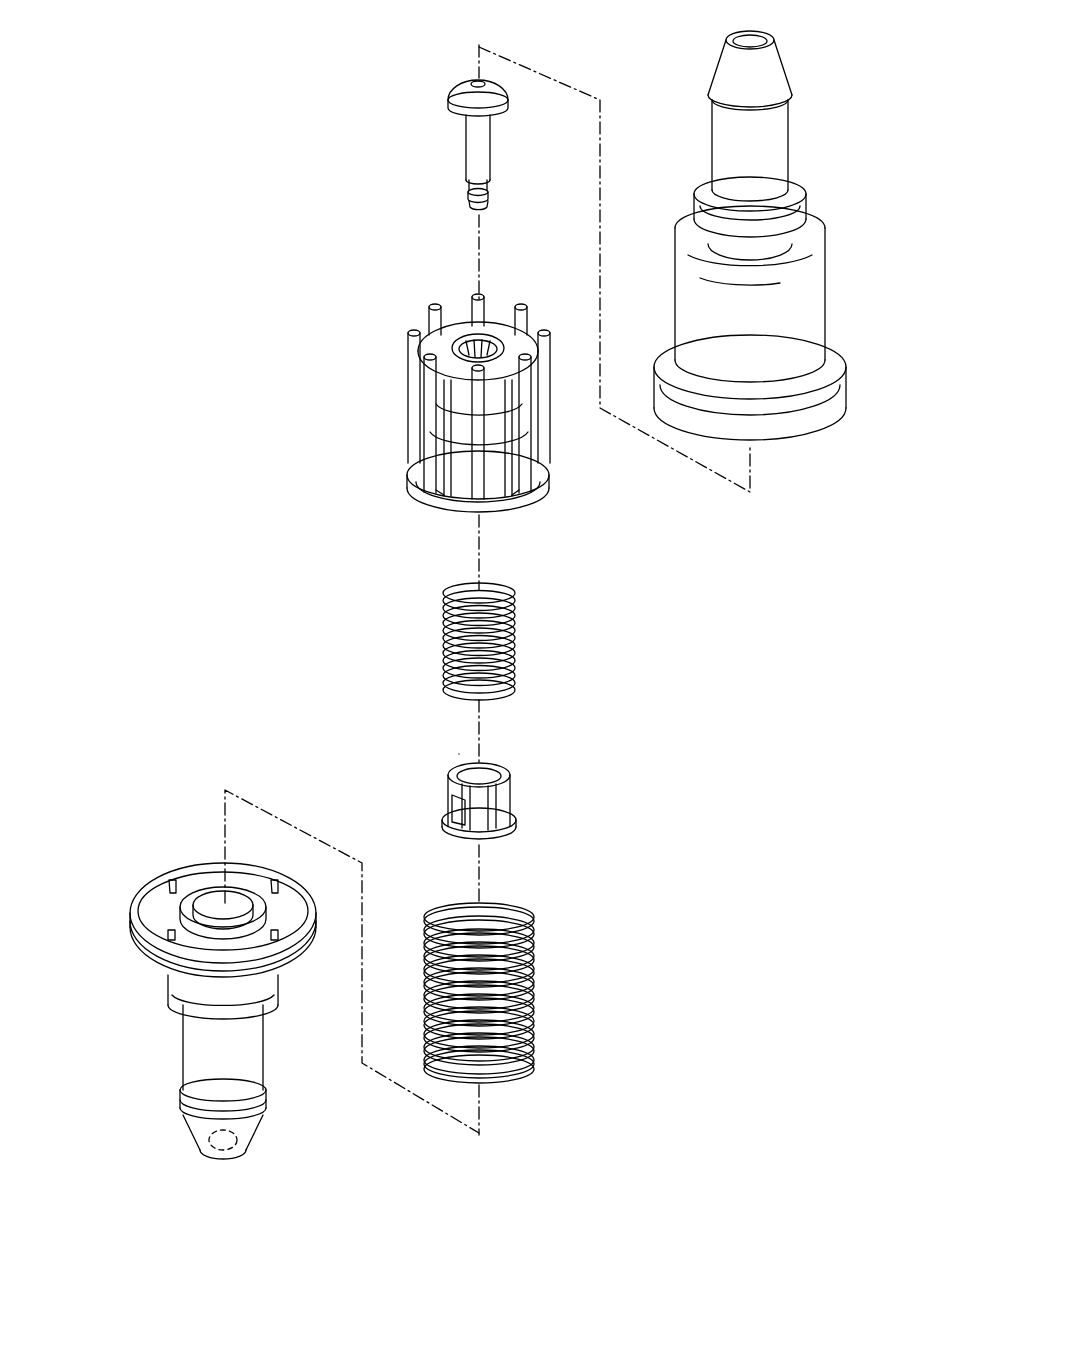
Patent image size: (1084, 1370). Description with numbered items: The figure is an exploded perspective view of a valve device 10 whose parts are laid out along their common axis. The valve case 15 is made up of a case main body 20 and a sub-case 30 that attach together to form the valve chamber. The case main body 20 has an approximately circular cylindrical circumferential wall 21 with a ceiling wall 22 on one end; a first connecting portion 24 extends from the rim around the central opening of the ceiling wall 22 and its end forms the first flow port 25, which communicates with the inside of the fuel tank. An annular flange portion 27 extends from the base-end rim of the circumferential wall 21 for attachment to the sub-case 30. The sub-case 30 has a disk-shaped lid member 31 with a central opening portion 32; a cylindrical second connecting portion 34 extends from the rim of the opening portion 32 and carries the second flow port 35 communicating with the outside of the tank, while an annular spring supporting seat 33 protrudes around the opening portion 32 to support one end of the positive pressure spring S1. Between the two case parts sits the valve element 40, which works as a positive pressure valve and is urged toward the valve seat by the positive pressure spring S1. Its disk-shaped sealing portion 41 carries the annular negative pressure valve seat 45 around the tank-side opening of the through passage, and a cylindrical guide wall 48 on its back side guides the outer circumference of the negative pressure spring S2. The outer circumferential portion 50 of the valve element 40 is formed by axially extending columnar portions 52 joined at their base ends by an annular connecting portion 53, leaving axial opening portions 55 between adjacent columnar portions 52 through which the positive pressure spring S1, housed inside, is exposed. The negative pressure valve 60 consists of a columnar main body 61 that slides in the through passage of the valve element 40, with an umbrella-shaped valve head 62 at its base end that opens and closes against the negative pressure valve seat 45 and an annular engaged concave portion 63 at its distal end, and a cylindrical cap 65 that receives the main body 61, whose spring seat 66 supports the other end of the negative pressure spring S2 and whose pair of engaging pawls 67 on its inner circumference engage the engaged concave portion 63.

The valve device 10 is at (390, 157).
The valve case 15 is at (787, 672).
The case main body 20 is at (778, 460).
The circumferential wall 21 is at (812, 300).
The ceiling wall 22 is at (802, 228).
The first connecting portion 24 is at (776, 132).
The first flow port 25 is at (752, 37).
The annular flange portion 27 is at (806, 395).
The sub-case 30 is at (297, 1096).
The lid member 31 is at (152, 943).
The opening portion 32 is at (220, 914).
The annular spring supporting seat 33 is at (180, 905).
The second connecting portion 34 is at (196, 1049).
The second flow port 35 is at (248, 1132).
The valve element 40 is at (506, 305).
The sealing portion 41 is at (440, 347).
The negative pressure valve seat 45 is at (470, 340).
The guide wall 48 is at (455, 415).
The outer circumferential portion 50 is at (405, 407).
The columnar portions 52 is at (410, 380).
The annular connecting portion 53 is at (548, 490).
The opening portions 55 is at (453, 476).
The negative pressure valve 60 is at (258, 252).
The main body 61 is at (437, 170).
The valve head 62 is at (505, 97).
The engaged concave portion 63 is at (490, 193).
The cap 65 is at (432, 765).
The spring seat 66 is at (515, 807).
The engaging pawls 67 is at (445, 820).
The positive pressure spring S1 is at (537, 968).
The negative pressure spring S2 is at (518, 640).